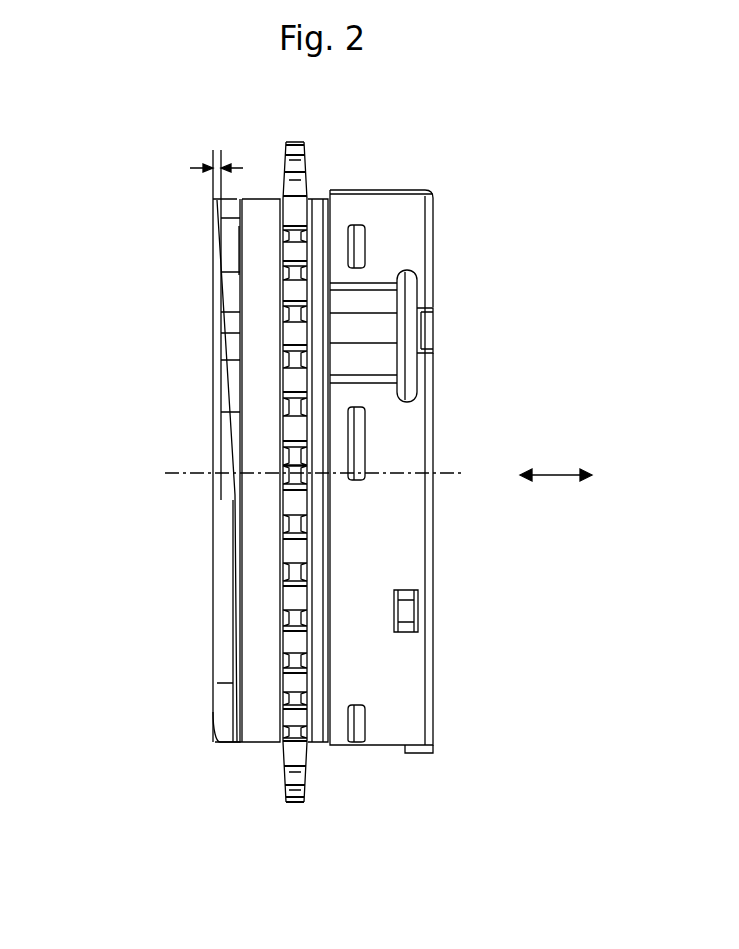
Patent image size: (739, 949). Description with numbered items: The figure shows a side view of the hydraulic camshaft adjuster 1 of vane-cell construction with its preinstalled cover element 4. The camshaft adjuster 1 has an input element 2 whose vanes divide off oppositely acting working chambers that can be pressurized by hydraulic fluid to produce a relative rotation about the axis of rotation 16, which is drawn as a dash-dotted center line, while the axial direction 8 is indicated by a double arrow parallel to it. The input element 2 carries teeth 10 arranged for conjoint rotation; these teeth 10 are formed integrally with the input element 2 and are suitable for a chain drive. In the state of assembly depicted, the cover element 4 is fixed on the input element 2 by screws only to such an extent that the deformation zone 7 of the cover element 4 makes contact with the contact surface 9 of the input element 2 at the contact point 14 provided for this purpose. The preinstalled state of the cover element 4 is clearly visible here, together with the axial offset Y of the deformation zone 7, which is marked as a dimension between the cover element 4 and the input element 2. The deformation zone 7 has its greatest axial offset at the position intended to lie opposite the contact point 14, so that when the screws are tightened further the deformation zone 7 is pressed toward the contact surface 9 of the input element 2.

The hydraulic camshaft adjuster 1 is at (97, 191).
The input element 2 is at (261, 210).
The cover element 4 is at (225, 592).
The deformation zone 7 is at (228, 322).
The axial direction 8 is at (556, 465).
The contact surface 9 is at (241, 226).
The teeth 10 is at (299, 167).
The contact point 14 is at (238, 330).
The axis of rotation 16 is at (446, 473).